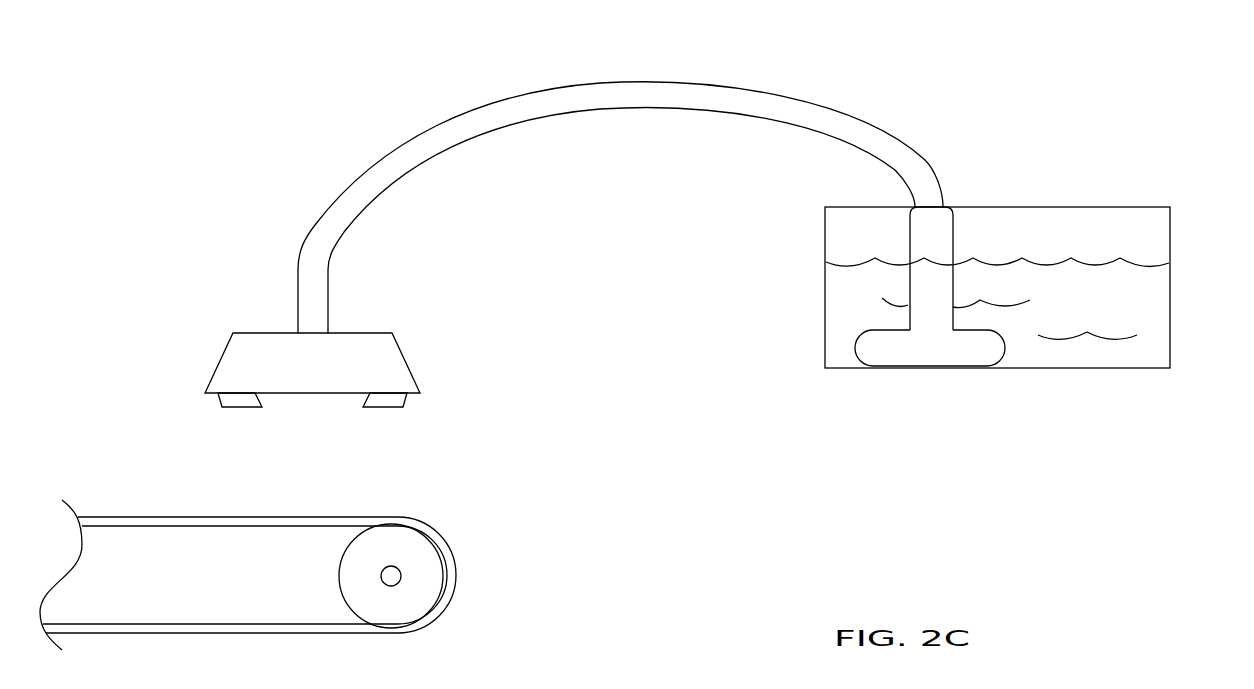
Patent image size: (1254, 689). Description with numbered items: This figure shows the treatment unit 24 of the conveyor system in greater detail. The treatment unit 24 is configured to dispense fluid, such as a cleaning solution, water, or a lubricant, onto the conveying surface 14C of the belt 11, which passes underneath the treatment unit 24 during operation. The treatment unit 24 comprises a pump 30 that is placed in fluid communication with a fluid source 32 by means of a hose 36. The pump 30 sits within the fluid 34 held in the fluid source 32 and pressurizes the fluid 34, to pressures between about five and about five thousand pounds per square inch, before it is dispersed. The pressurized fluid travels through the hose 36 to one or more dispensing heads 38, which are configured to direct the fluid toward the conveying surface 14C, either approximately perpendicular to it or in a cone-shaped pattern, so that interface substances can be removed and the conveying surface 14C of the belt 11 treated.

The treatment unit 24 is at (396, 87).
The hose 36 is at (603, 82).
The dispensing heads 38 is at (215, 403).
The fluid source 32 is at (1170, 286).
The pump 30 is at (940, 243).
The fluid 34 is at (1104, 310).
The conveying surface 14C is at (158, 517).
The belt 11 is at (437, 535).